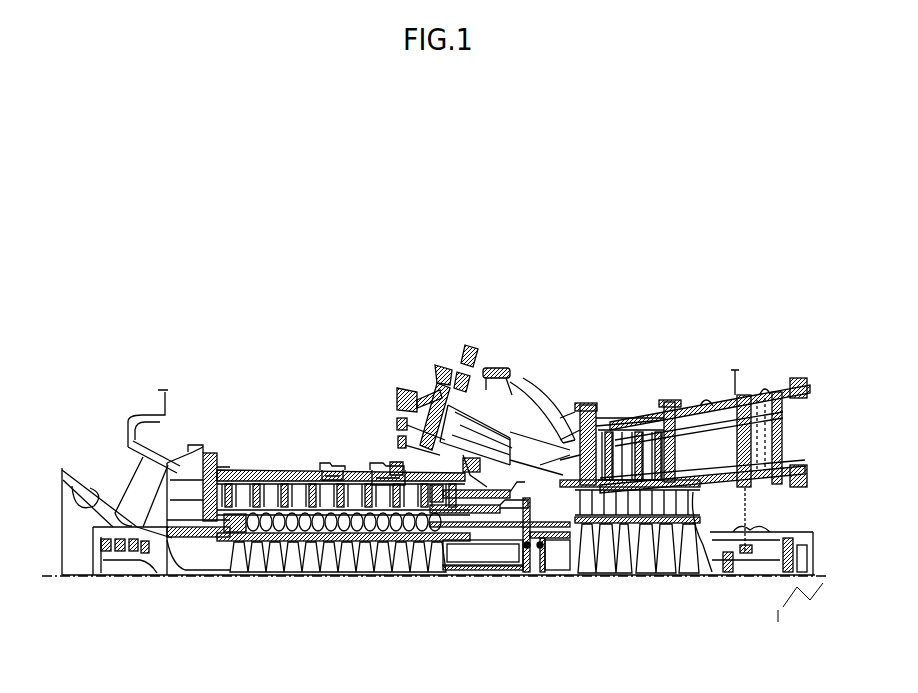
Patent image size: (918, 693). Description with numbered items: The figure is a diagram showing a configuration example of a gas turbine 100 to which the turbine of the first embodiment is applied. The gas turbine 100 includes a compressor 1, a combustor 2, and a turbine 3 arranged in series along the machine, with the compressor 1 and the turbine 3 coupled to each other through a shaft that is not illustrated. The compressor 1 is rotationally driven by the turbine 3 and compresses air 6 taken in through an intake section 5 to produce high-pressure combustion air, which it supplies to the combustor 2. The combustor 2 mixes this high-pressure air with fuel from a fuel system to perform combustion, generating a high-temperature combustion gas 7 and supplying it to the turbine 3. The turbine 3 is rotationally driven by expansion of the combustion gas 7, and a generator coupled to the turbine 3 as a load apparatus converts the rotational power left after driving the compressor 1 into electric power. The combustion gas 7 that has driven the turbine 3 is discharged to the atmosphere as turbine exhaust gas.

The gas turbine 100 is at (277, 337).
The compressor 1 is at (272, 585).
The combustor 2 is at (433, 361).
The turbine 3 is at (588, 585).
The intake section 5 is at (108, 442).
The air 6 is at (103, 467).
The combustion gas 7 is at (637, 415).